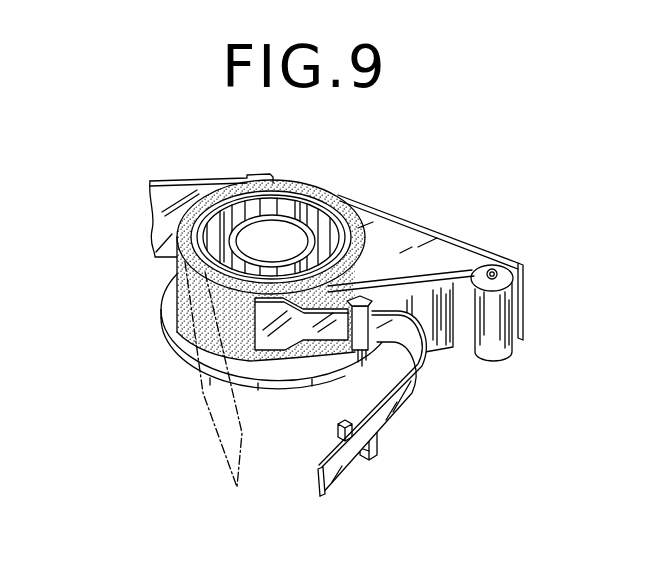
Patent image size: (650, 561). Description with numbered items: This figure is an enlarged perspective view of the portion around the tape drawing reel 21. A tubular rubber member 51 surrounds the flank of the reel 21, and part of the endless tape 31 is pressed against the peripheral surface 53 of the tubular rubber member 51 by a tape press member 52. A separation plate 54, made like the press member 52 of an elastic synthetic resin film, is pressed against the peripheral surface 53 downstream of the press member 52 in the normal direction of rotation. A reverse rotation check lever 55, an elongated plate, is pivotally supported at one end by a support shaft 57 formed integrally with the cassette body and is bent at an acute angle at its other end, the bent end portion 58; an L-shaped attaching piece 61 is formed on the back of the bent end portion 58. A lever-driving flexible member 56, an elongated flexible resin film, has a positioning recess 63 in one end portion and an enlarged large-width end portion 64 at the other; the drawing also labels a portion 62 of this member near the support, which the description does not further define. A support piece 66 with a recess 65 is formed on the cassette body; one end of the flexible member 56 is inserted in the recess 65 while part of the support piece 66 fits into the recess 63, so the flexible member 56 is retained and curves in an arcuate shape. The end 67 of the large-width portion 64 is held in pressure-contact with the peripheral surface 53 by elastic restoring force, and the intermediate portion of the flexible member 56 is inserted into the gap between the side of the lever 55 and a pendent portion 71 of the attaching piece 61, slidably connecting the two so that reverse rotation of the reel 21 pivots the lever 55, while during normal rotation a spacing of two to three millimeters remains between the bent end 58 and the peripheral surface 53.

The tape drawing reel 21 is at (276, 238).
The endless tape 31 is at (212, 432).
The tubular rubber member 51 is at (176, 259).
The tape press member 52 is at (184, 196).
The peripheral surface 53 is at (165, 317).
The separation plate 54 is at (454, 262).
The reverse rotation check lever 55 is at (452, 328).
The flexible member 56 is at (404, 396).
The support shaft 57 is at (494, 272).
The bent end portion 58 is at (345, 230).
The L-shaped attaching piece 61 is at (362, 300).
The strip end 62 is at (318, 497).
The positioning recess 63 is at (378, 450).
The large-width end portion 64 is at (276, 338).
The recess 65 is at (338, 437).
The support piece 66 is at (364, 460).
The end 67 is at (212, 340).
The pendent portion 71 is at (362, 358).